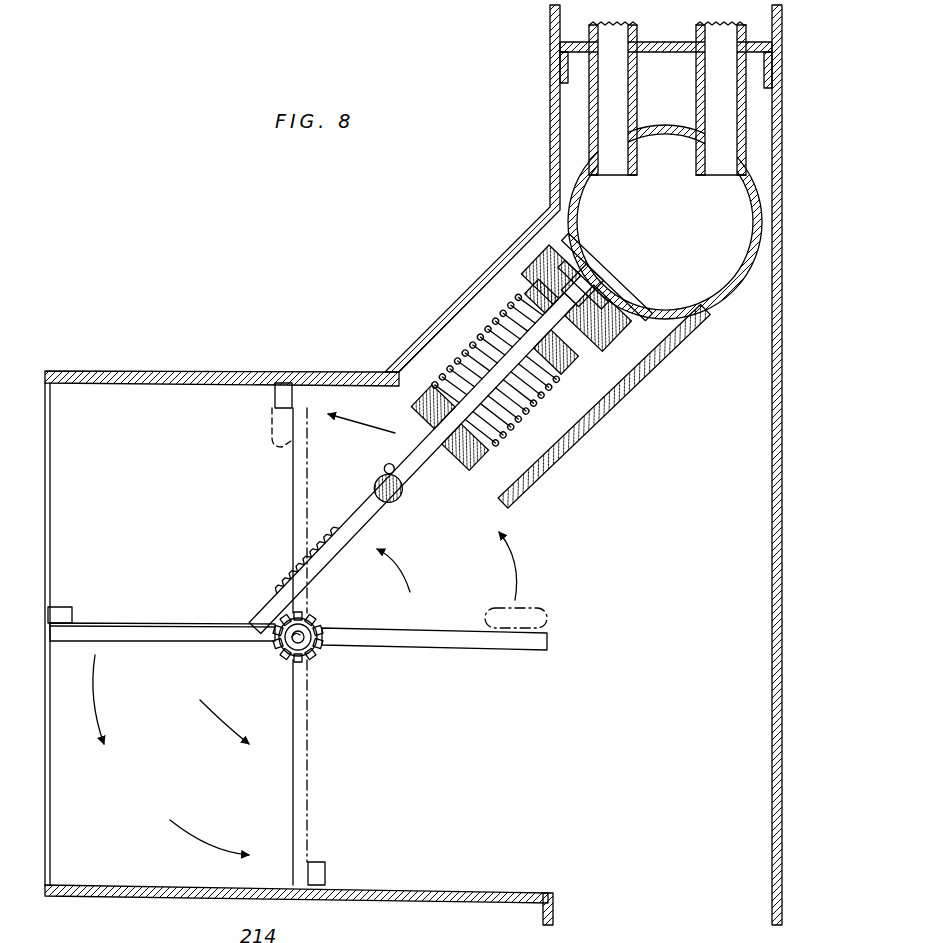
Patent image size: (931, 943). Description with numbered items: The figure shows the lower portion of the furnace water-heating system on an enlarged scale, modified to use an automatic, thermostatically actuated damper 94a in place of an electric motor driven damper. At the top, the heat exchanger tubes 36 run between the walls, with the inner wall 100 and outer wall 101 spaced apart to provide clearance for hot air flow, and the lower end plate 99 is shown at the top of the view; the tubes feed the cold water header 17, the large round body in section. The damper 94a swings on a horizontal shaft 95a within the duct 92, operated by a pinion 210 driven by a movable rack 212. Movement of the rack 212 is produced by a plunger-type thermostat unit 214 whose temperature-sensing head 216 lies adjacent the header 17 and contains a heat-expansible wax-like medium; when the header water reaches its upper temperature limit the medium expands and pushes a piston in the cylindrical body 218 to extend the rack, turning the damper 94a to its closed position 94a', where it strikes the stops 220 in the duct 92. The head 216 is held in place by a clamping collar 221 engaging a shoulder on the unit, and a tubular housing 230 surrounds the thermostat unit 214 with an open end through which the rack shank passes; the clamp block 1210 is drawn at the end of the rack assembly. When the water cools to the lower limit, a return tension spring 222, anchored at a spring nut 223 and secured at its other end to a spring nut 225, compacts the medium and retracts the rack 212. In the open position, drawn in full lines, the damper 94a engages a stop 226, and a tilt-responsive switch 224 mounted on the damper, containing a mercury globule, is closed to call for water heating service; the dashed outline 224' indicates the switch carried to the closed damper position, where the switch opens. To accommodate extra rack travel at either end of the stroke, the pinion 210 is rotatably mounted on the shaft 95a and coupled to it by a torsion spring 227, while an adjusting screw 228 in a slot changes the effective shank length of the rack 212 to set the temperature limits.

The header 17 is at (763, 255).
The tubes 36 is at (590, 118).
The duct 92 is at (197, 371).
The damper 94a is at (298, 621).
The closed position of damper 94a' is at (344, 646).
The horizontal shaft 95a is at (282, 652).
The lower end plate 99 is at (770, 46).
The inner wall 100 is at (556, 12).
The outer wall 101 is at (782, 10).
The clamp block 1210 is at (585, 283).
The pinion 210 is at (316, 652).
The rack 212 is at (385, 528).
The thermostat unit 214 is at (612, 418).
The temperature-sensing head 216 is at (590, 293).
The cylindrical body 218 is at (500, 330).
The stops 220 is at (275, 392).
The clamping collar 221 is at (648, 358).
The return tension spring 222 is at (513, 420).
The spring nut 223 is at (607, 358).
The tilt-responsive switch 224 is at (550, 611).
The shelf end in alternate position 224' is at (243, 444).
The spring nut 225 is at (470, 458).
The stop 226 is at (70, 607).
The torsion spring 227 is at (320, 628).
The adjusting screw 228 is at (390, 478).
The tubular housing 230 is at (497, 338).